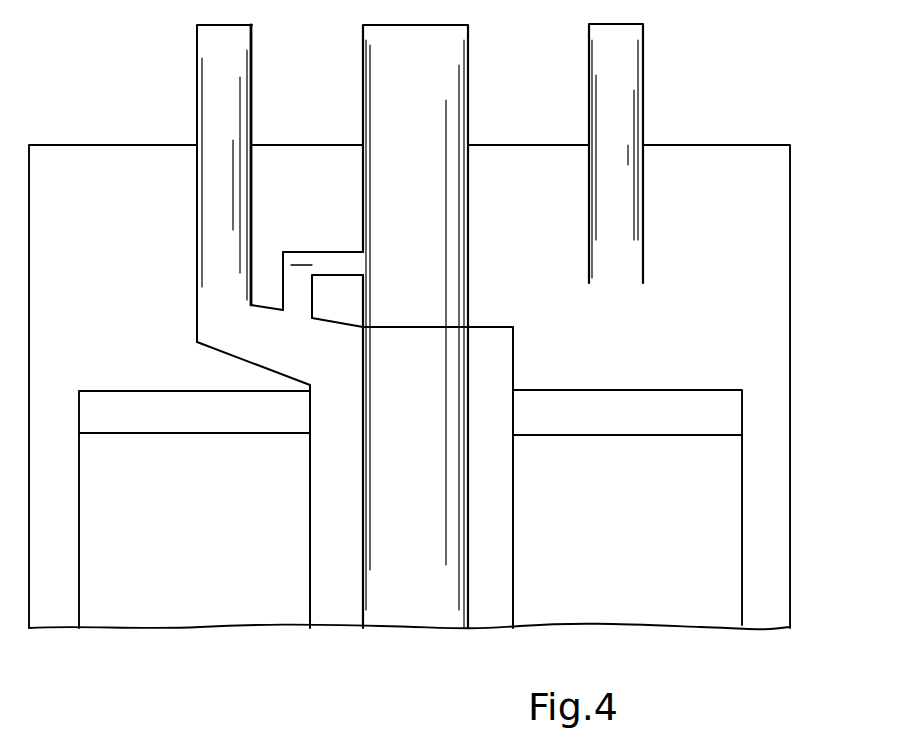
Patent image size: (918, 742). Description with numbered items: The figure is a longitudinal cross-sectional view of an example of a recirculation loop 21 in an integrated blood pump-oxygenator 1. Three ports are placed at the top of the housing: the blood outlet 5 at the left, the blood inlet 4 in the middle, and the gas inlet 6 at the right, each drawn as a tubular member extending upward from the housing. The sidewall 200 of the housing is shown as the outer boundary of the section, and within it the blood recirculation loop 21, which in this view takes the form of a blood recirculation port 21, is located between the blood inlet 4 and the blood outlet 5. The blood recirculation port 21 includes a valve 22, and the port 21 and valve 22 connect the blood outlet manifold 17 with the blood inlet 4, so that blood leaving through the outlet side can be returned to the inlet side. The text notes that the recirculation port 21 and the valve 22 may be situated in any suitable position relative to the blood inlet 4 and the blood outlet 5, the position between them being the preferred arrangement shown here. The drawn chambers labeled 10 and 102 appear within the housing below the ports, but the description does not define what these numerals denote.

The integrated blood pump-oxygenator 1 is at (439, 323).
The blood inlet 4 is at (468, 58).
The blood outlet 5 is at (197, 43).
The gas inlet 6 is at (645, 57).
The contact receptacle 10 is at (713, 458).
The blood outlet manifold 17 is at (205, 313).
The blood recirculation loop 21 is at (292, 283).
The valve 22 is at (299, 265).
The receptacle opening 102 is at (685, 402).
The sidewall 200 is at (790, 478).